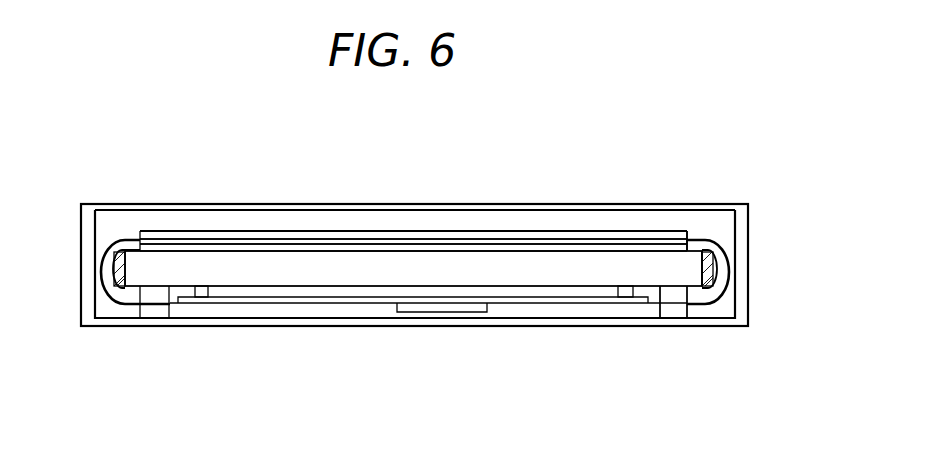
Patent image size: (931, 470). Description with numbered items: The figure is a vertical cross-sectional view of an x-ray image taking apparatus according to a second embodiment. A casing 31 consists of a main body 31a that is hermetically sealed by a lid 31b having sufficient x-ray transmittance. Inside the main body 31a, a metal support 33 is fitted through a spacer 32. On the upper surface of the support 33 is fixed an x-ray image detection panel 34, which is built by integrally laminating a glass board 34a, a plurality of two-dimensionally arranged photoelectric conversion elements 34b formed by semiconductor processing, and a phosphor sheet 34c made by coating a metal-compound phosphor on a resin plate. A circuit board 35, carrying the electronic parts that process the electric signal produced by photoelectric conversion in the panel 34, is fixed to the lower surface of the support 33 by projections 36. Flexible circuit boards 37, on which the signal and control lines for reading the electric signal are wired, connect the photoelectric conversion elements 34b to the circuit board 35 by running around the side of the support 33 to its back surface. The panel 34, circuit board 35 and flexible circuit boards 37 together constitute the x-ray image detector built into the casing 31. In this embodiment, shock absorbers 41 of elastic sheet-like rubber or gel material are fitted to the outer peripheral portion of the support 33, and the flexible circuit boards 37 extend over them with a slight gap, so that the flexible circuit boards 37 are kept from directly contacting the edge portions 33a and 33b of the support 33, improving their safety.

The casing 31 is at (613, 203).
The main body of casing 31a is at (742, 227).
The lid 31b is at (555, 207).
The spacer 32 is at (675, 310).
The support 33 is at (314, 272).
The edge portion of support 33a is at (700, 250).
The edge portion of support 33b is at (698, 305).
The x-ray image detection panel 34 is at (410, 230).
The board 34a is at (499, 246).
The photoelectric conversion elements 34b is at (318, 238).
The phosphor sheet 34c is at (178, 233).
The circuit board 35 is at (502, 299).
The projections 36 is at (202, 292).
The flexible circuit boards 37 is at (122, 305).
The shock absorbers 41 is at (118, 270).